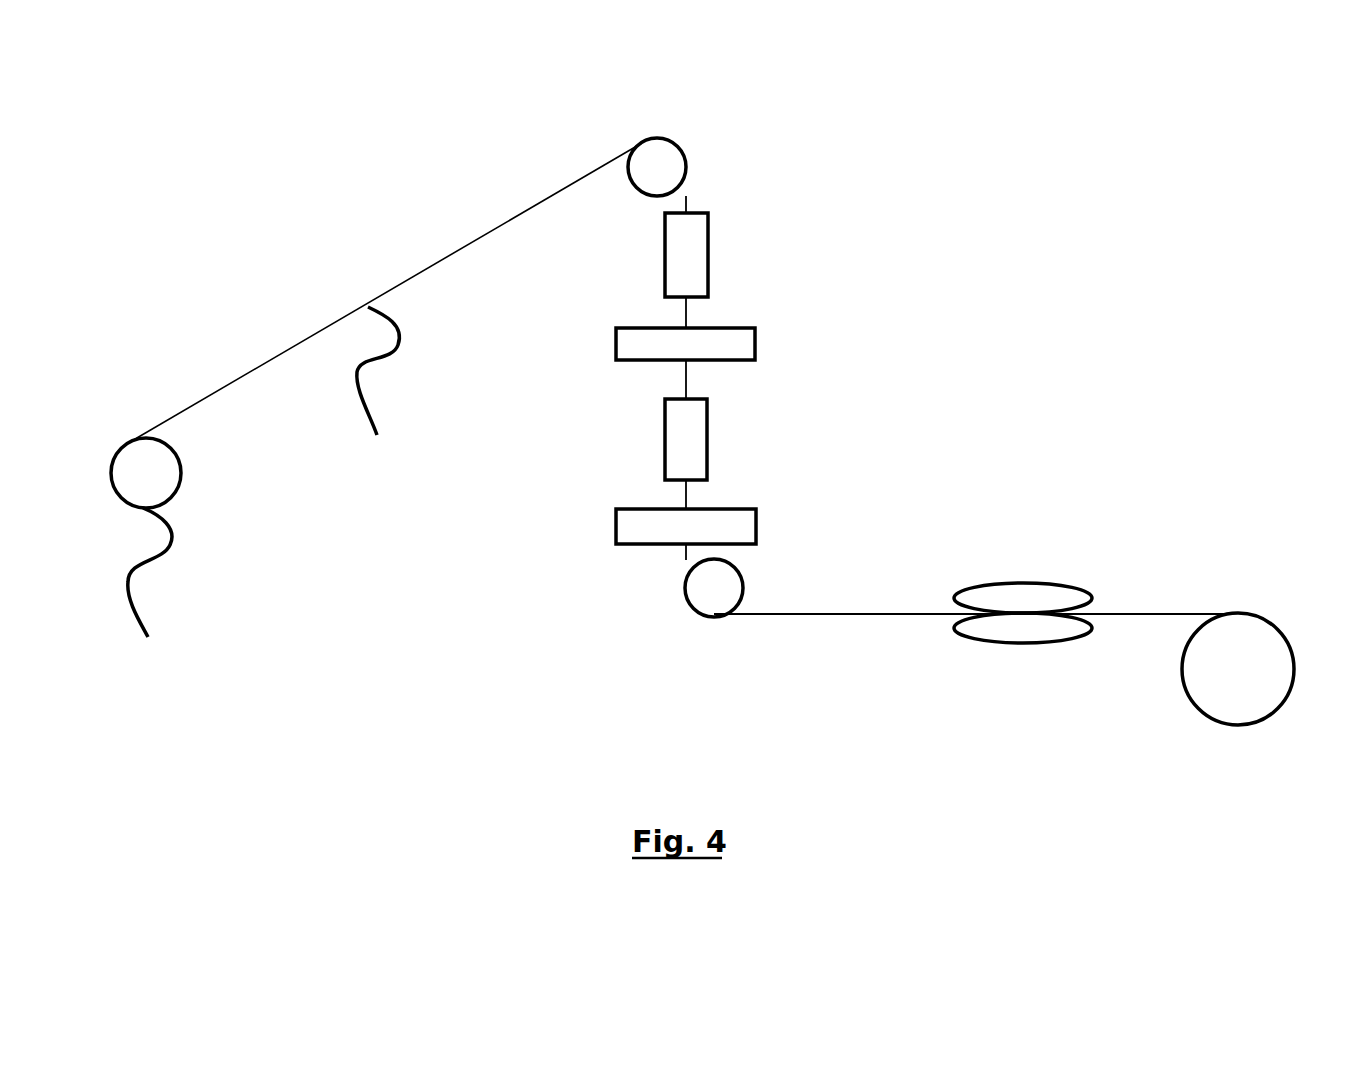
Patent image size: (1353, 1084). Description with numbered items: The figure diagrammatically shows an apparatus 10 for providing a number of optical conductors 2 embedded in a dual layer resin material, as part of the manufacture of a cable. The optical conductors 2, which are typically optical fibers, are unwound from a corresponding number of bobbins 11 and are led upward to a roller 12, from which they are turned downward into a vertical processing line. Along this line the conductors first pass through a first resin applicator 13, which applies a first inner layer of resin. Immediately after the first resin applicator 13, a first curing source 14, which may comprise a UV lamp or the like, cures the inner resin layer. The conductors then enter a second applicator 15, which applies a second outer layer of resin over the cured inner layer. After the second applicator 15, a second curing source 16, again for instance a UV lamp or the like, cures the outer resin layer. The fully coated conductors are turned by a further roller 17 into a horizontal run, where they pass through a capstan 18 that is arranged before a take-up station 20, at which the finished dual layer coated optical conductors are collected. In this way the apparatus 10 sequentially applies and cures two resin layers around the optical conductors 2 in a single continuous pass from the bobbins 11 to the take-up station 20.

The apparatus 10 is at (1118, 310).
The bobbins 11 is at (146, 561).
The optical conductors 2 is at (378, 396).
The guide roller 12 is at (688, 168).
The first resin applicator 13 is at (710, 255).
The first curing source 14 is at (757, 348).
The second applicator 15 is at (709, 440).
The second curing source 16 is at (758, 528).
The guide roller 17 is at (683, 598).
The capstan 18 is at (1028, 578).
The take-up station 20 is at (1238, 593).